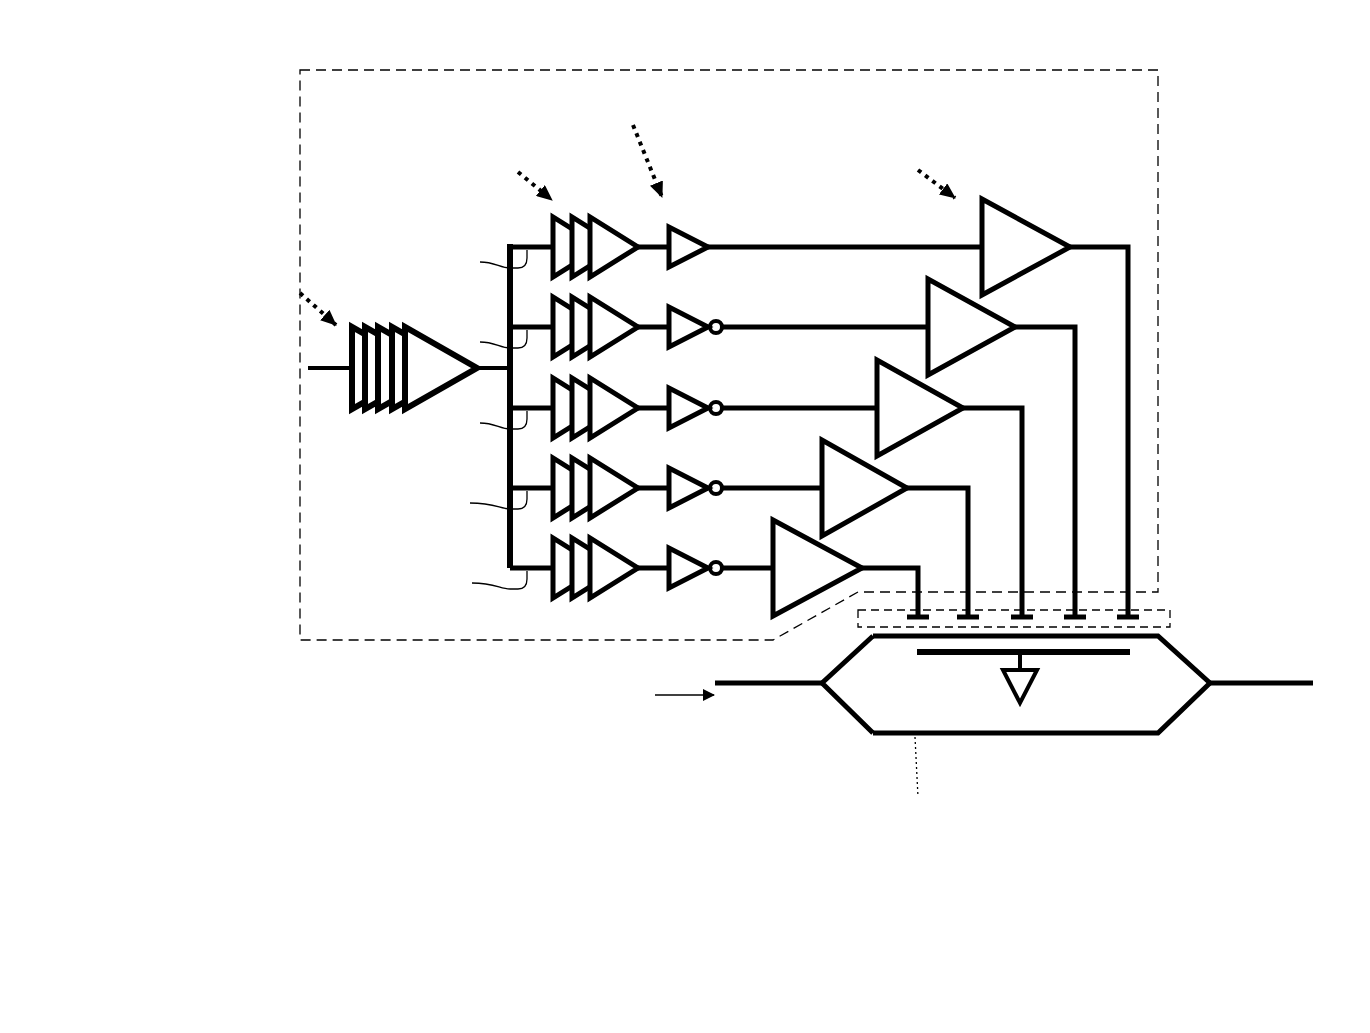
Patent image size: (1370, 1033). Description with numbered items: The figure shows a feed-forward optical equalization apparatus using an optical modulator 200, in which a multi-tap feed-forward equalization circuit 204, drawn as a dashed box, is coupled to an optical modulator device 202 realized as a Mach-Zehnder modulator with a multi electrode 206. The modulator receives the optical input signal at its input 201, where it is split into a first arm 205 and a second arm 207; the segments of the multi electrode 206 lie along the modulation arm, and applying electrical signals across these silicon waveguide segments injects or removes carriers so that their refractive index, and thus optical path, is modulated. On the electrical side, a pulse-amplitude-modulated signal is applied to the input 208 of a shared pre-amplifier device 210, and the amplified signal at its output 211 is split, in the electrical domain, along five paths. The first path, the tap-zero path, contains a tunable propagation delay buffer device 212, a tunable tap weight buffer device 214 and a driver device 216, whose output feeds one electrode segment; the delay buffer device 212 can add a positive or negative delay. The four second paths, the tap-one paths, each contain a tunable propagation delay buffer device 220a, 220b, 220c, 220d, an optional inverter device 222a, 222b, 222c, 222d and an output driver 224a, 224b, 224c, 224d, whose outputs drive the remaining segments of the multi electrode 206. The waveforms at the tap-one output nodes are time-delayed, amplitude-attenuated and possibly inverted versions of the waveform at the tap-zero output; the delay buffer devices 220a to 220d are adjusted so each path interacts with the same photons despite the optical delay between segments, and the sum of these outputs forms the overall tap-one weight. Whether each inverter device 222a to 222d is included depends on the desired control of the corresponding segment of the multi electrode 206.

The optical modulator 200 is at (218, 160).
The input 201 is at (735, 686).
The optical modulator device 202 is at (852, 718).
The multi-tap feed-forward equalization circuit 204 is at (1162, 160).
The first arm 205 is at (1150, 729).
The multi electrode 206 is at (1175, 614).
The second arm 207 is at (1152, 641).
The input 208 is at (310, 372).
The pre-amplifier device 210 is at (420, 385).
The output 211 is at (487, 370).
The tunable propagation delay buffer device 212 is at (607, 250).
The tunable tap weight buffer device 214 is at (688, 253).
The driver device 216 is at (1025, 255).
The tunable propagation delay buffer device 220a is at (603, 576).
The tunable propagation delay buffer device 220b is at (603, 496).
The tunable propagation delay buffer device 220c is at (605, 416).
The tunable propagation delay buffer device 220d is at (605, 335).
The inverter device 222a is at (688, 573).
The inverter device 222b is at (688, 493).
The inverter device 222c is at (688, 413).
The inverter device 222d is at (688, 332).
The output driver 224a is at (780, 594).
The output driver 224b is at (862, 492).
The output driver 224c is at (905, 418).
The output driver 224d is at (960, 335).